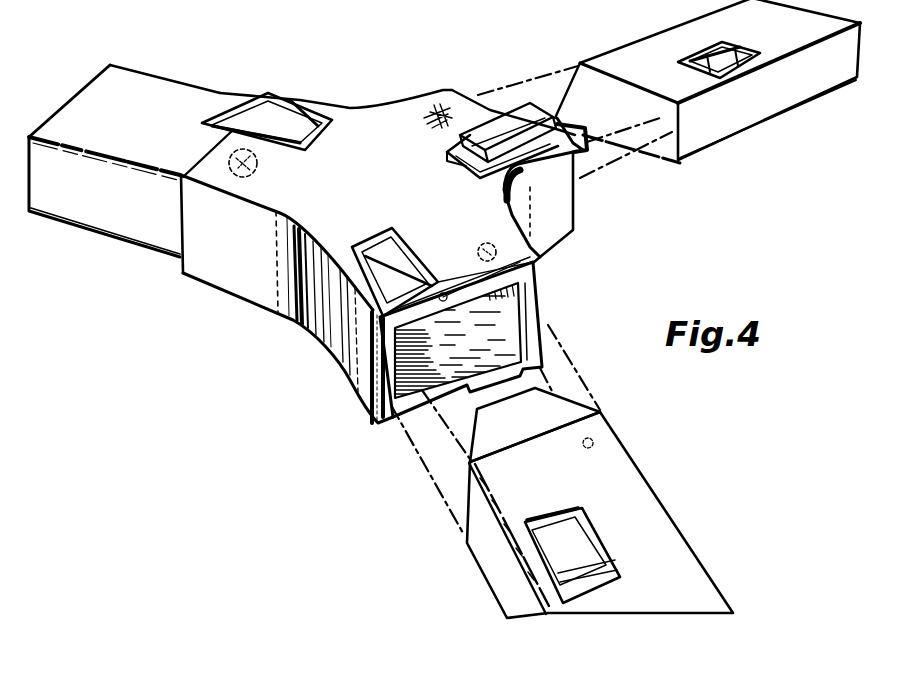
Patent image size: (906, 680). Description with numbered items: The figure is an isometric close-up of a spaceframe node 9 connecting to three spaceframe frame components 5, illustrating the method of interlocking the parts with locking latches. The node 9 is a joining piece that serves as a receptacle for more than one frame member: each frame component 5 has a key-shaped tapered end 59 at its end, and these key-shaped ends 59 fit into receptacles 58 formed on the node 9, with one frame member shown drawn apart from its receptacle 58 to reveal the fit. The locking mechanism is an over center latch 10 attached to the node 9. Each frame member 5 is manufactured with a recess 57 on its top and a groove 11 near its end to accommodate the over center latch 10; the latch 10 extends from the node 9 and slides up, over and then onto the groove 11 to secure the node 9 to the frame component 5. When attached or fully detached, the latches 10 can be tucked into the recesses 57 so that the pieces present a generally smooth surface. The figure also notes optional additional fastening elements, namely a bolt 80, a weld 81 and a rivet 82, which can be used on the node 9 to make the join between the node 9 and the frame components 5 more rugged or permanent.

The frame component 5 is at (128, 218).
The node 9 is at (257, 279).
The over center latch 10 is at (270, 108).
The groove 11 is at (733, 43).
The recess 57 is at (700, 50).
The receptacle 58 is at (524, 320).
The key-shaped end 59 is at (650, 137).
The bolt 80 is at (256, 180).
The weld 81 is at (412, 128).
The rivet 82 is at (483, 243).